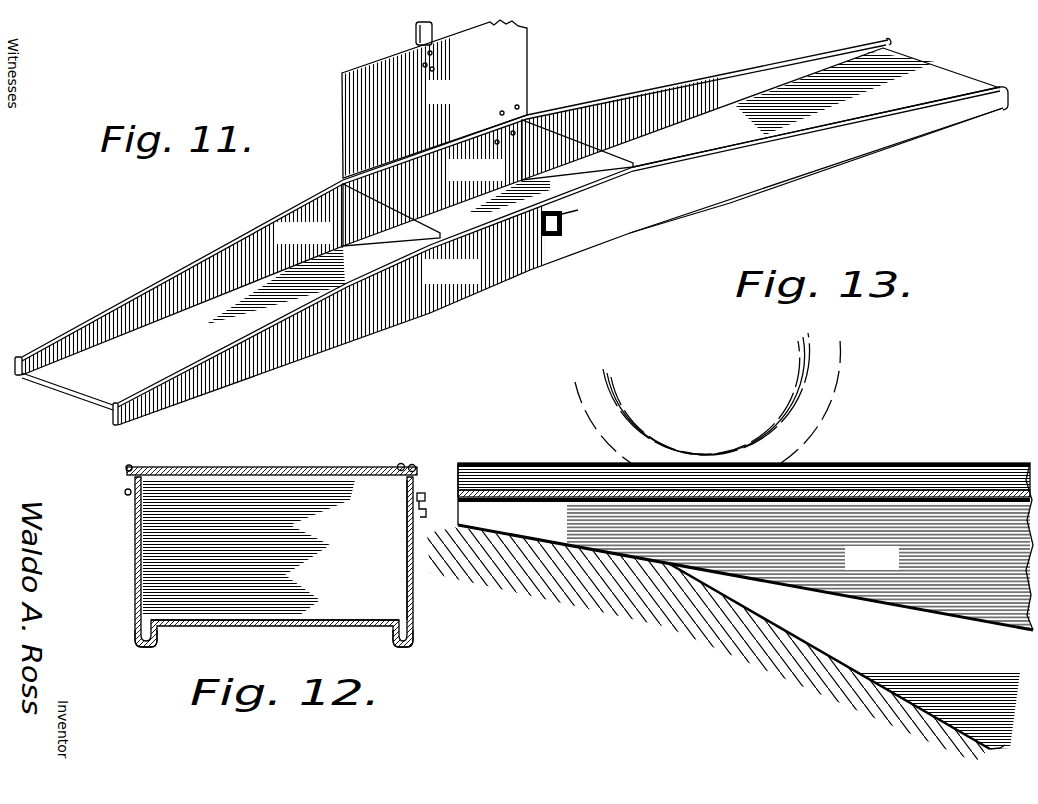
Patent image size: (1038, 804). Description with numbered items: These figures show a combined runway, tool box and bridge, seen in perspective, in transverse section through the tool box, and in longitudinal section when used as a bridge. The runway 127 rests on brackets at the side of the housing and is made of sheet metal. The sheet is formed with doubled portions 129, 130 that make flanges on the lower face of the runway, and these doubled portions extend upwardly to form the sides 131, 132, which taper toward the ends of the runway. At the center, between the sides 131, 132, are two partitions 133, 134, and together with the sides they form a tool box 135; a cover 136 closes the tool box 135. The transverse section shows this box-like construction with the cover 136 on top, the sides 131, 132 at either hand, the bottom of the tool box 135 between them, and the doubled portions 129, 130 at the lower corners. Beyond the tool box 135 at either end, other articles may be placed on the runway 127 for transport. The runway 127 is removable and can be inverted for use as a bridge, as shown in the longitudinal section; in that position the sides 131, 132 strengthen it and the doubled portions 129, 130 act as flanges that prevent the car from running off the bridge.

In FIG. 11, the runway 127 is at (819, 140).
In FIG. 11, the doubled portion 129 is at (18, 378).
In FIG. 12, the doubled portion 129 is at (135, 640).
In FIG. 13, the doubled portion 129 is at (547, 450).
In FIG. 11, the doubled portion 130 is at (116, 427).
In FIG. 12, the doubled portion 130 is at (414, 640).
In FIG. 11, the side 131 is at (560, 256).
In FIG. 12, the side 131 is at (407, 560).
In FIG. 13, the side 131 is at (745, 546).
In FIG. 11, the side 132 is at (452, 211).
In FIG. 12, the side 132 is at (134, 568).
In FIG. 11, the partition 133 is at (391, 215).
In FIG. 11, the partition 134 is at (577, 150).
In FIG. 11, the tool box 135 is at (463, 212).
In FIG. 12, the tool box 135 is at (296, 622).
In FIG. 13, the tool box 135 is at (744, 509).
In FIG. 11, the cover 136 is at (434, 99).
In FIG. 12, the cover 136 is at (255, 457).